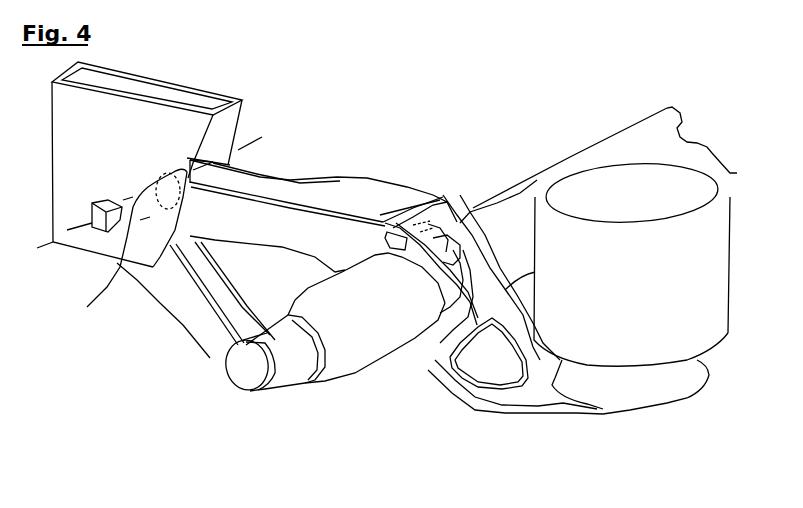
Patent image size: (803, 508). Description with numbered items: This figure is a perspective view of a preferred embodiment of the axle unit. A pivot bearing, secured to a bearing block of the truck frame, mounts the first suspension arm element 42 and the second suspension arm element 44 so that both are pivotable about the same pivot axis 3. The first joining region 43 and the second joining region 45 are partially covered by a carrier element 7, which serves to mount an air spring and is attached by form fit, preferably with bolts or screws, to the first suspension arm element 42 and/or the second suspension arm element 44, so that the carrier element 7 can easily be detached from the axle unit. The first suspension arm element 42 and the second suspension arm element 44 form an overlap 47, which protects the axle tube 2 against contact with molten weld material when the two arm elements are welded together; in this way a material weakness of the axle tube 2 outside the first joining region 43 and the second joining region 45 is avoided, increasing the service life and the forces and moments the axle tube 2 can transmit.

The axle tube 2 is at (497, 215).
The pivot axis 3 is at (87, 307).
The carrier element 7 is at (537, 388).
The first suspension arm element 42 is at (333, 193).
The first joining region 43 is at (447, 207).
The second suspension arm element 44 is at (200, 318).
The second joining region 45 is at (473, 305).
The overlap 47 is at (470, 288).